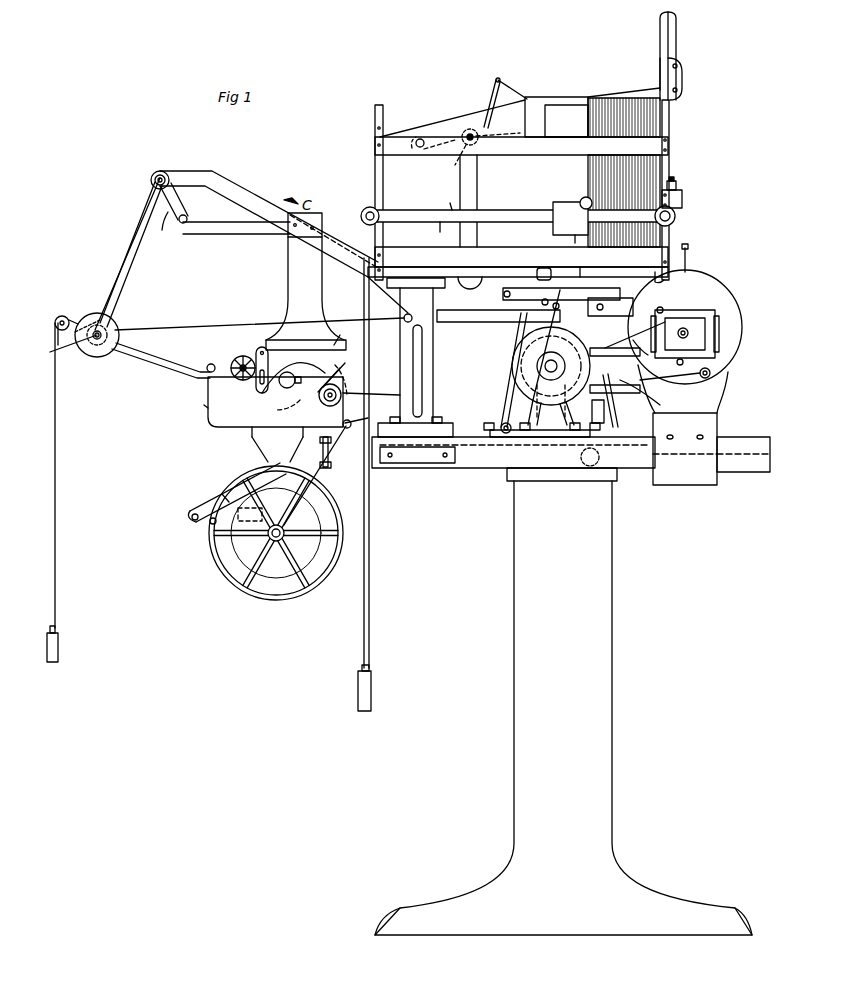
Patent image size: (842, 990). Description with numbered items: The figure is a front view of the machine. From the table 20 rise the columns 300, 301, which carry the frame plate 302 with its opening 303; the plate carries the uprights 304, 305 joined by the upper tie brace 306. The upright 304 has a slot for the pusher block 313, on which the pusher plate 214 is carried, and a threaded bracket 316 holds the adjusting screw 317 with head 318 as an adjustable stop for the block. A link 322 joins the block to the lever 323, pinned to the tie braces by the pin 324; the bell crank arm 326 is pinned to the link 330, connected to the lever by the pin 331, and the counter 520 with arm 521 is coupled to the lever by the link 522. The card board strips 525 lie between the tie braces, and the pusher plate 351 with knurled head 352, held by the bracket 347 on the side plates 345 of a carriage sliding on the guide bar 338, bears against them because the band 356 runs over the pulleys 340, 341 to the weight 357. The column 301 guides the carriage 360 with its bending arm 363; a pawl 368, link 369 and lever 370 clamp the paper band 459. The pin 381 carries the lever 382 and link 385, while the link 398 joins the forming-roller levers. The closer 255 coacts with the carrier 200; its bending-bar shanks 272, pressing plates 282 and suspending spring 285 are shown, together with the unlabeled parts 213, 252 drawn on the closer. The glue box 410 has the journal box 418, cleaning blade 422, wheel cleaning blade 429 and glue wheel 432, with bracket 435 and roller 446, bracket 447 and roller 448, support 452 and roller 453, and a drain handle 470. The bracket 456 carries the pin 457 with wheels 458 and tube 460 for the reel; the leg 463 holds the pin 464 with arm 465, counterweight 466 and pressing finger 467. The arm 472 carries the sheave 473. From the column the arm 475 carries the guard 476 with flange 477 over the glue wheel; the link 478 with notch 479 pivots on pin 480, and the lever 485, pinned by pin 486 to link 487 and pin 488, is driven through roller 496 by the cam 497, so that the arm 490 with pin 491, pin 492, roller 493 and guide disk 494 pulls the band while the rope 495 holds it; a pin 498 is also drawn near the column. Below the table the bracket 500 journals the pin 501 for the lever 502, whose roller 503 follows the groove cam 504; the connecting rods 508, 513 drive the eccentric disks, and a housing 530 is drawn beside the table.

The table 20 is at (770, 448).
The rectangular carrier 200 is at (716, 322).
The lamp socket 213 is at (696, 338).
The pusher plate 214 is at (660, 58).
The pivot pin 252 is at (692, 363).
The closer 255 is at (713, 290).
The shanks 272 is at (719, 336).
The pressing plate 282 is at (668, 312).
The spring 285 is at (686, 255).
The column 300 is at (433, 377).
The column 301 is at (613, 385).
The frame plate 302 is at (437, 265).
The opening 303 is at (654, 272).
The upright 304 is at (669, 118).
The upright 305 is at (374, 182).
The upper tie brace 306 is at (521, 147).
The pusher block 313 is at (676, 40).
The threaded bracket 316 is at (682, 202).
The adjusting screw 317 is at (676, 186).
The head 318 is at (671, 177).
The link 322 is at (682, 80).
The lever 323 is at (470, 130).
The pin 324 is at (421, 139).
The bell crank arm 326 is at (480, 285).
The link 330 is at (477, 181).
The pin 331 is at (460, 163).
The guide bar 338 is at (443, 231).
The pulley 340 is at (501, 215).
The pulley 341 is at (675, 221).
The side plates 345 is at (570, 218).
The bracket 347 is at (568, 242).
The pusher plate 351 is at (588, 170).
The knurled head 352 is at (584, 198).
The band 356 is at (435, 198).
The weight 357 is at (371, 689).
The carriage 360 is at (649, 302).
The bending arm 363 is at (639, 338).
The pawl 368 is at (591, 263).
The link 369 is at (535, 272).
The lever 370 is at (514, 352).
The pin 381 is at (505, 433).
The lever 382 is at (508, 400).
The link 385 is at (603, 411).
The link 398 is at (660, 406).
The glue box 410 is at (275, 402).
The journal box 418 is at (256, 385).
The paper strip cleaning blade 422 is at (241, 356).
The wheel cleaning blade 429 is at (330, 384).
The glue wheel 432 is at (293, 372).
The bracket 435 is at (334, 447).
The guide roller 446 is at (349, 420).
The bracket 447 is at (204, 405).
The guide roller 448 is at (209, 364).
The support 452 is at (300, 397).
The guide roller 453 is at (306, 336).
The bracket 456 is at (258, 450).
The pin 457 is at (286, 538).
The wheels 458 is at (283, 600).
The paper band 459 is at (370, 488).
The tube 460 is at (245, 578).
The leg 463 is at (222, 494).
The pin 464 is at (193, 520).
The arm 465 is at (212, 524).
The counterweight 466 is at (250, 522).
The pressing finger 467 is at (190, 505).
The handle 470 is at (322, 452).
The arm 472 is at (156, 372).
The sheave 473 is at (62, 316).
The arm 475 is at (266, 197).
The guard 476 is at (288, 284).
The flange 477 is at (343, 334).
The link 478 is at (175, 208).
The notch 479 is at (162, 230).
The pin 480 is at (160, 171).
The lever 485 is at (498, 319).
The pin 486 is at (543, 300).
The link 487 is at (482, 322).
The pin 488 is at (190, 236).
The arm 490 is at (124, 250).
The pin 491 is at (143, 212).
The pin 492 is at (110, 330).
The roller 493 is at (58, 349).
The guide disk 494 is at (90, 358).
The rope 495 is at (55, 558).
The roller 496 is at (512, 370).
The cam 497 is at (610, 317).
The pin 498 is at (405, 321).
The journal bracket 500 is at (600, 455).
The pin 501 is at (582, 481).
The lever 502 is at (580, 452).
The roller 503 is at (634, 335).
The groove cam 504 is at (542, 411).
The connecting rod 508 is at (672, 380).
The connecting rod 513 is at (615, 387).
The counter 520 is at (566, 97).
The arm 521 is at (510, 92).
The link 522 is at (500, 106).
The card board strips 525 is at (590, 118).
The motor housing 530 is at (686, 485).